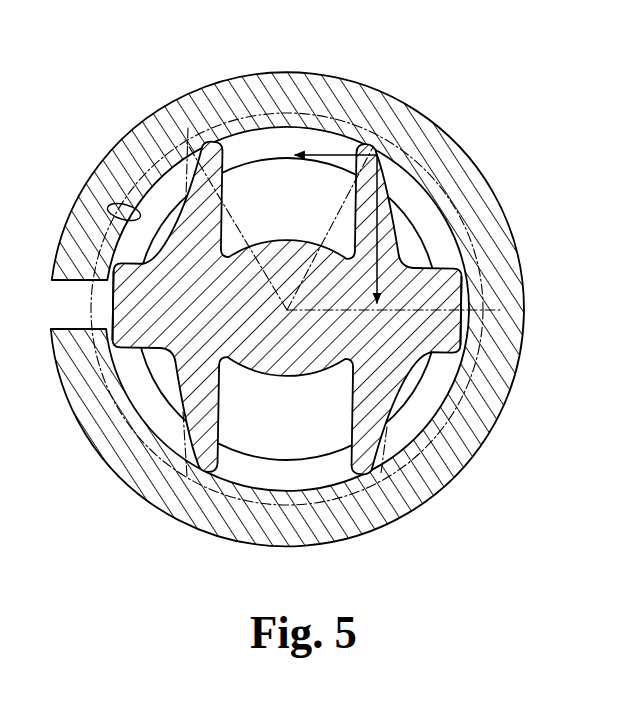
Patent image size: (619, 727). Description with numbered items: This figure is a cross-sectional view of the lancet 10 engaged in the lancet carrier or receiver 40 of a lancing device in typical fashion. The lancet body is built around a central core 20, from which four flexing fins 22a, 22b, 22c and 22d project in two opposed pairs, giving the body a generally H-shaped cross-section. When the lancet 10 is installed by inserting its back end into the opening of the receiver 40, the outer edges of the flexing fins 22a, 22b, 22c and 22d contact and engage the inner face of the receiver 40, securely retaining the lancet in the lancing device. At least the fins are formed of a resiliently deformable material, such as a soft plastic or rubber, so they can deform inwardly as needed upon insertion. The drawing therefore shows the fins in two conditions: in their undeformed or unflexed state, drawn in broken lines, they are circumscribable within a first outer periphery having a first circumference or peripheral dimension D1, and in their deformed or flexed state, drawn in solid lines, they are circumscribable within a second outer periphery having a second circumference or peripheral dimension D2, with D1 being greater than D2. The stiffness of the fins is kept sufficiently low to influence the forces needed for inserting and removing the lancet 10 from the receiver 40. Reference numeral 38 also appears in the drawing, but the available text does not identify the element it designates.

The lancet 10 is at (286, 345).
The central core 20 is at (293, 373).
The flexing fin 22a is at (203, 181).
The flexing fin 22b is at (379, 178).
The flexing fin 22c is at (200, 463).
The flexing fin 22d is at (378, 466).
The rotor bearing face 38 is at (113, 305).
The lancet carrier or receiver 40 is at (507, 367).
The first circumference or peripheral dimension D1 is at (222, 118).
The second circumference or peripheral dimension D2 is at (108, 212).